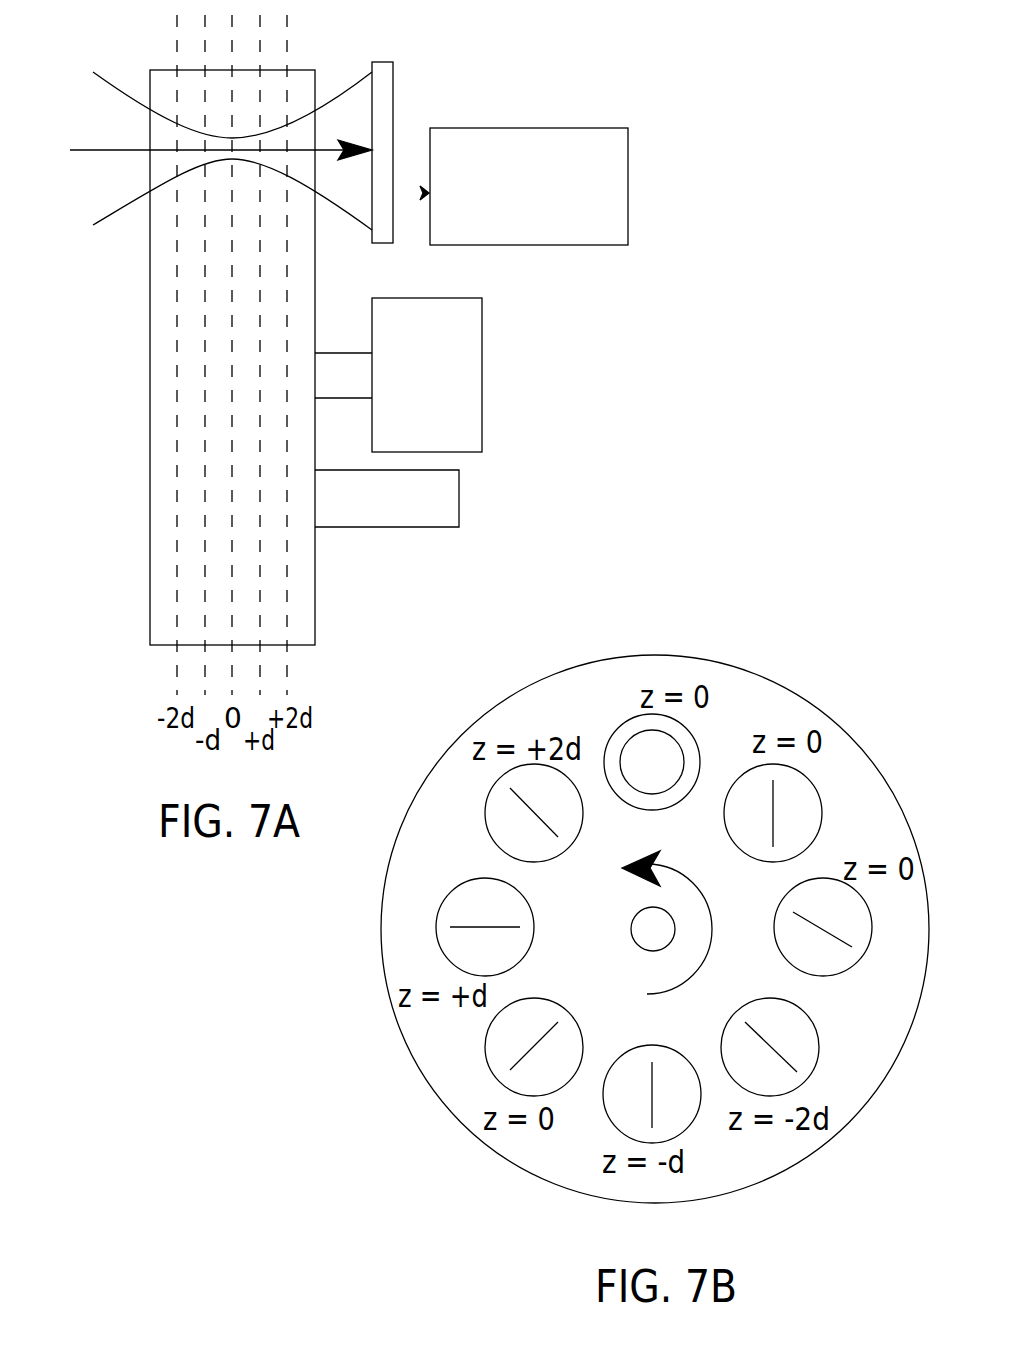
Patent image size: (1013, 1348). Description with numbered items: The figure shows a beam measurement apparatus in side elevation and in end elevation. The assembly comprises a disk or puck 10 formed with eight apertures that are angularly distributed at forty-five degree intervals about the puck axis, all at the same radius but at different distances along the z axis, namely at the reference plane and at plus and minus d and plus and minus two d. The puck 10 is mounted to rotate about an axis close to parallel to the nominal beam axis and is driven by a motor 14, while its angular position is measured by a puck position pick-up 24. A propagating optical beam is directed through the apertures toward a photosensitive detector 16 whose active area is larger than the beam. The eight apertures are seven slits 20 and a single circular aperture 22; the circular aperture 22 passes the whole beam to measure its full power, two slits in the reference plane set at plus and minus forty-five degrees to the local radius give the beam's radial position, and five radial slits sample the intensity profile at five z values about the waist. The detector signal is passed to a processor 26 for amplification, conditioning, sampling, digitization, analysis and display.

In FIG. 7A, the puck 10 is at (160, 453).
In FIG. 7B, the puck 10 is at (845, 1103).
In FIG. 7A, the motor 14 is at (467, 416).
In FIG. 7A, the photosensitive detector 16 is at (385, 68).
In FIG. 7B, the slits 20 is at (523, 803).
In FIG. 7B, the circular aperture 22 is at (632, 737).
In FIG. 7A, the puck position pick-up 24 is at (440, 507).
In FIG. 7A, the processor 26 is at (598, 237).